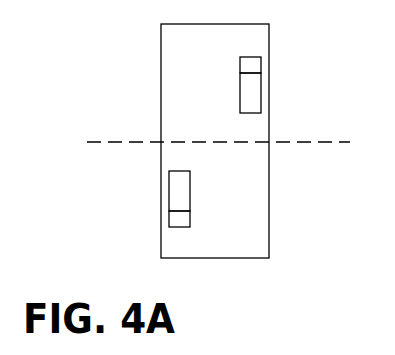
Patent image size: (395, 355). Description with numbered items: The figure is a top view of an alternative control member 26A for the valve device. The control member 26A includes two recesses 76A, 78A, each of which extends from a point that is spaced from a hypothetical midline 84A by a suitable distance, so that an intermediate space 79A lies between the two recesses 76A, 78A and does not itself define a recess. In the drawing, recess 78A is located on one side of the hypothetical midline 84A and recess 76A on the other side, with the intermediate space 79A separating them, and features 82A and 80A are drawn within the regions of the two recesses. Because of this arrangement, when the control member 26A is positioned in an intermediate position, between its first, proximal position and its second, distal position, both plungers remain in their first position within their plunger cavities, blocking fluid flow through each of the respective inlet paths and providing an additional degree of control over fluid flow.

The alternative control member 26A is at (160, 59).
The hypothetical midline 84A is at (109, 141).
The recess 78A is at (253, 65).
The upper recess 82A is at (253, 95).
The intermediate space 79A is at (227, 157).
The lower recess 80A is at (181, 188).
The recess 76A is at (176, 216).